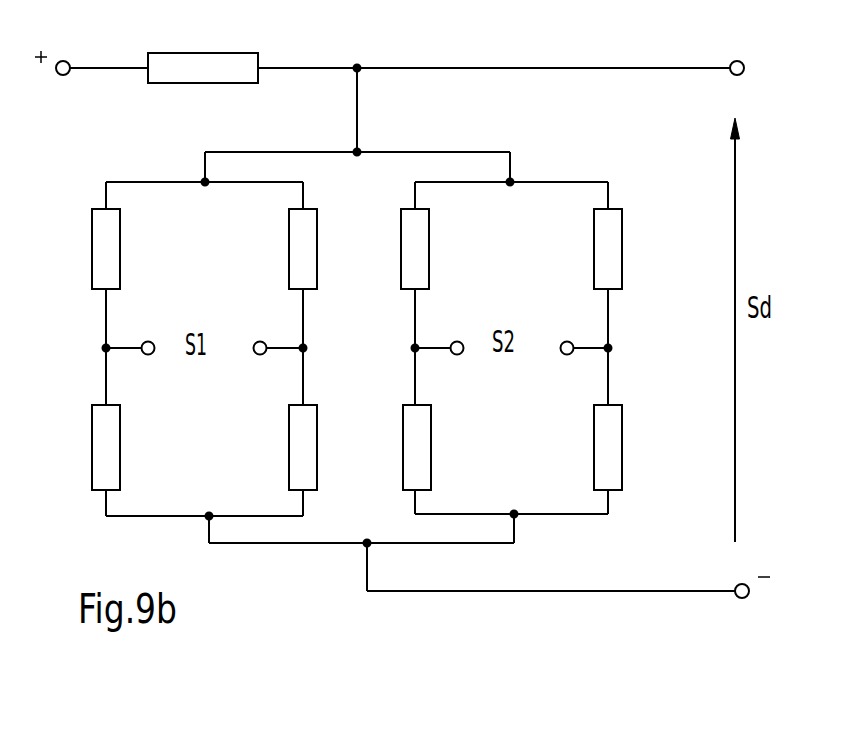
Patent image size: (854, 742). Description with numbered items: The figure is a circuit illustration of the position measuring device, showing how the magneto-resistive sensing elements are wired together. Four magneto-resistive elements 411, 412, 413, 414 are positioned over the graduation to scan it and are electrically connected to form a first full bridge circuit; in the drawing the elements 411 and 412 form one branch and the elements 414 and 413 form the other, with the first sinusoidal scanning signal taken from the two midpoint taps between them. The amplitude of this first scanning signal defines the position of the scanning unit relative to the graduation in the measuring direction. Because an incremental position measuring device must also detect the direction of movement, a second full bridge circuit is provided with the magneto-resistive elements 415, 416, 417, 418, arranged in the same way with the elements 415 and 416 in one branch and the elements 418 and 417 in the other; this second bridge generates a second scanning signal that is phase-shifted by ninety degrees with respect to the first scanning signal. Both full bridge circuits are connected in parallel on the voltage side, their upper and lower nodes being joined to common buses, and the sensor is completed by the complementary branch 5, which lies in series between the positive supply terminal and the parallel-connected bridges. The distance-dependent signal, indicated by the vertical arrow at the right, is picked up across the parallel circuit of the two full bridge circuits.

The complementary branch 5 is at (220, 53).
The magneto-resistive element 411 is at (93, 235).
The magneto-resistive element 412 is at (93, 436).
The magneto-resistive element 413 is at (290, 435).
The magneto-resistive element 414 is at (289, 237).
The magneto-resistive element 415 is at (424, 238).
The magneto-resistive element 416 is at (426, 441).
The magneto-resistive element 417 is at (618, 437).
The magneto-resistive element 418 is at (613, 245).